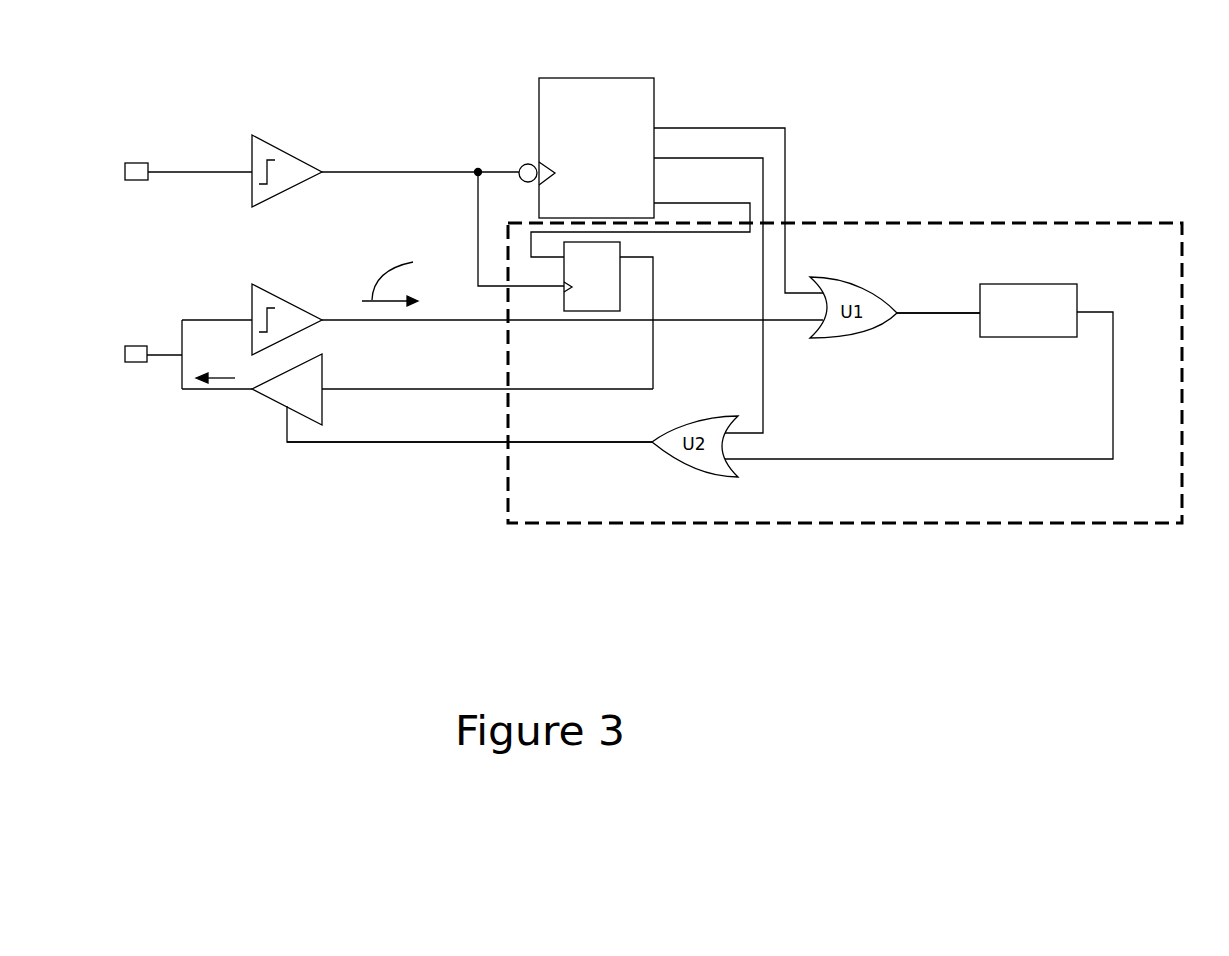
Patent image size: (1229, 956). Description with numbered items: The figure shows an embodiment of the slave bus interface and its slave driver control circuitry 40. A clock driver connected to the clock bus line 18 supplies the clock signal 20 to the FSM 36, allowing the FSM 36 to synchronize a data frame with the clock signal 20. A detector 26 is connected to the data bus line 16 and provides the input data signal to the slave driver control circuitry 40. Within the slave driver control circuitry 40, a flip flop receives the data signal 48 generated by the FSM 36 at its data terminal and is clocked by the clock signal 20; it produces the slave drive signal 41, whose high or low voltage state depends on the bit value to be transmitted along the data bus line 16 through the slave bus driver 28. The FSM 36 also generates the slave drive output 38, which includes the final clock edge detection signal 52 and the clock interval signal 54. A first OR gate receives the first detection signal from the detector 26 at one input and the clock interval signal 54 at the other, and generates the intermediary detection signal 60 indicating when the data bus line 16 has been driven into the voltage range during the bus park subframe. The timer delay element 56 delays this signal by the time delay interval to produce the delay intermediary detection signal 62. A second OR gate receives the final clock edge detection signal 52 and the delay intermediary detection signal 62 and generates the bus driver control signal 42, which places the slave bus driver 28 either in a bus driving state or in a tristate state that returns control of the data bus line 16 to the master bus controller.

The data bus line 16 is at (165, 348).
The clock bus line 18 is at (188, 170).
The clock signal 20 is at (356, 158).
The detector 26 is at (287, 318).
The slave bus driver 28 is at (452, 398).
The FSM 36 is at (566, 185).
The slave drive output 38 is at (630, 369).
The slave driver control circuitry 40 is at (1092, 221).
The slave drive signal 41 is at (562, 377).
The bus driver control signal 42 is at (562, 432).
The data signal 48 is at (686, 188).
The final clock edge detection signal 52 is at (676, 148).
The clock interval signal 54 is at (690, 110).
The timer delay element 56 is at (987, 310).
The intermediary detection signal 60 is at (910, 301).
The delay intermediary detection signal 62 is at (948, 447).